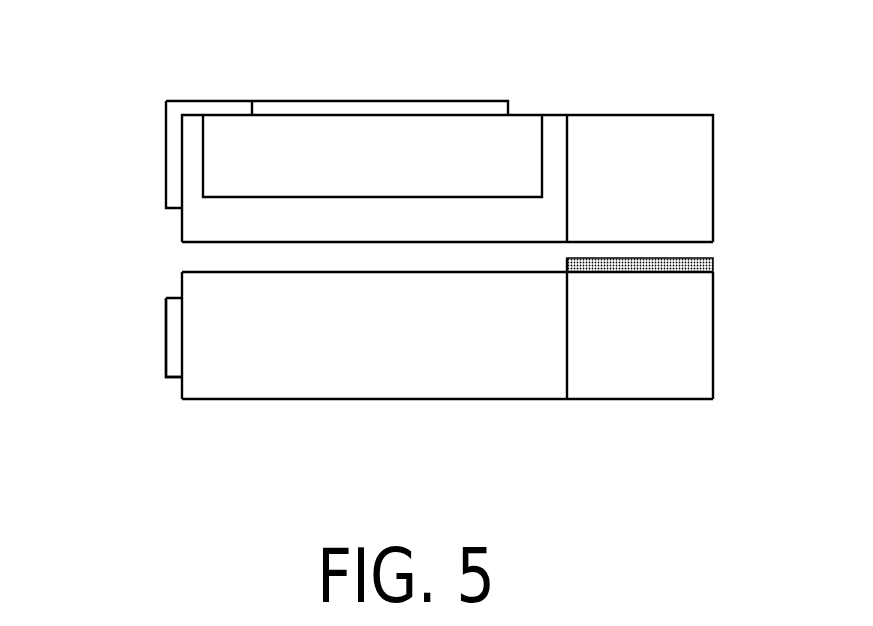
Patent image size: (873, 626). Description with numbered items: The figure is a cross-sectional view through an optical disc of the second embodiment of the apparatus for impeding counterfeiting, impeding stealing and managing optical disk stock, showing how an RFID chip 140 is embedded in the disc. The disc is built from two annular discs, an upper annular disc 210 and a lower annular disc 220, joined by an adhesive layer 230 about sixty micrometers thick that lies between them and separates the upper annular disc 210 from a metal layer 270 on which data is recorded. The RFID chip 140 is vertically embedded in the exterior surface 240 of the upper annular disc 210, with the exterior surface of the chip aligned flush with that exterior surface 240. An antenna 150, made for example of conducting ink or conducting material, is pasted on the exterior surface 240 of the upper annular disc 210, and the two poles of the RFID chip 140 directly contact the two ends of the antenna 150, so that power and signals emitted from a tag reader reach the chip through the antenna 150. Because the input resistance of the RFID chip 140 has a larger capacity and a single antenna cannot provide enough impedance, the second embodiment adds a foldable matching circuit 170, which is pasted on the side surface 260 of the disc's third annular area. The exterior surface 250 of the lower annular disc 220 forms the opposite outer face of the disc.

The antenna 150 is at (383, 106).
The foldable matching circuit 170 is at (175, 318).
The side surface 260 is at (182, 390).
The RFID chip 140 is at (513, 152).
The exterior surface of the upper annular disc 240 is at (516, 113).
The upper annular disc 210 is at (537, 255).
The adhesive layer 230 is at (567, 215).
The metal layer 270 is at (663, 265).
The lower annular disc 220 is at (552, 366).
The exterior surface of the lower annular disc 250 is at (338, 399).